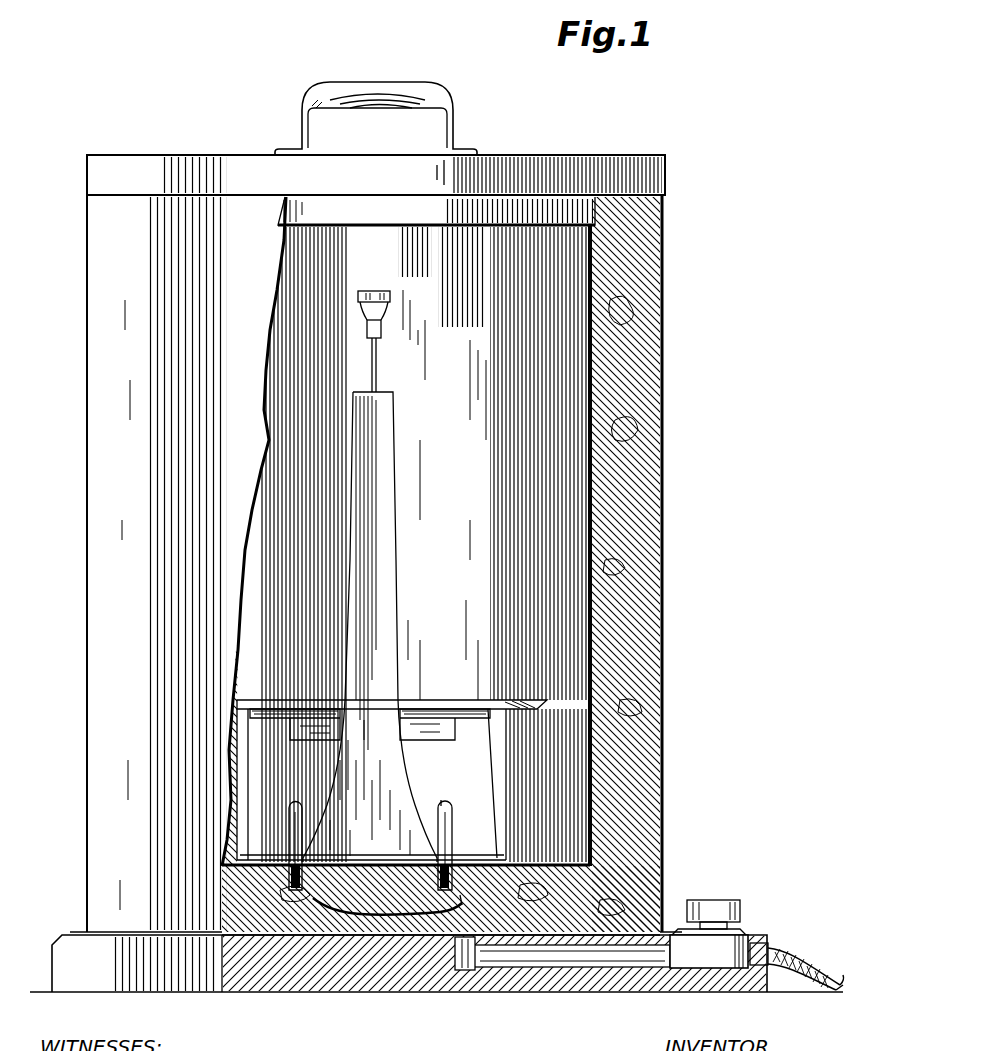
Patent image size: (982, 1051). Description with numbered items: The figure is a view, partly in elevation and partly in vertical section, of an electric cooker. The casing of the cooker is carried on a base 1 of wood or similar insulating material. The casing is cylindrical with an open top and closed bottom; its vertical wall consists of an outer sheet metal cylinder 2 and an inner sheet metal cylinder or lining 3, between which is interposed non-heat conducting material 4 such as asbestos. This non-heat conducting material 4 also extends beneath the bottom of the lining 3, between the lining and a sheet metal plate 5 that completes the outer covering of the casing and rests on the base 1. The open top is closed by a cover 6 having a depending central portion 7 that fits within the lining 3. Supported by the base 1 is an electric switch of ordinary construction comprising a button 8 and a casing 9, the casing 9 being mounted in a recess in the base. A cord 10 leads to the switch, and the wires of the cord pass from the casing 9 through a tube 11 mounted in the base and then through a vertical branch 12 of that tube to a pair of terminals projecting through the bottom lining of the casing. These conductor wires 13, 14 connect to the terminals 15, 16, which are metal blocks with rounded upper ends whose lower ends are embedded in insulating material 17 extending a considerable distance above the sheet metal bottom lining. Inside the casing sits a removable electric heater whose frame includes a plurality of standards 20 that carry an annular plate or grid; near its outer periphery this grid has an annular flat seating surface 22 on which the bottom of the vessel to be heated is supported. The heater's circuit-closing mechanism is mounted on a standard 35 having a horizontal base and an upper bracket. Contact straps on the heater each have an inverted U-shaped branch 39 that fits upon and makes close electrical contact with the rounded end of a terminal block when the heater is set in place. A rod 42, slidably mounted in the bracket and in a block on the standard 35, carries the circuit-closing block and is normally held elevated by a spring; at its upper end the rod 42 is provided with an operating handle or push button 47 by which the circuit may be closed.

The base 1 is at (358, 965).
The outer sheet metal cylinder 2 is at (662, 497).
The inner sheet metal cylinder or lining 3 is at (592, 545).
The non-heat conducting material 4 is at (634, 475).
The sheet metal plate 5 is at (296, 940).
The cover 6 is at (423, 170).
The depending central portion 7 is at (436, 212).
The button 8 is at (735, 902).
The casing 9 is at (709, 948).
The cord 10 is at (790, 962).
The tube 11 is at (535, 957).
The vertical branch 12 is at (462, 962).
The conductor wire 13 is at (462, 895).
The conductor wire 14 is at (313, 898).
The terminal 15 is at (447, 818).
The terminal 16 is at (300, 819).
The insulating material 17 is at (445, 872).
The standards 20 is at (500, 758).
The annular flat seating surface 22 is at (448, 697).
The standard 35 is at (370, 627).
The inverted U-shaped branch 39 is at (440, 792).
The rod 42 is at (378, 362).
The operating handle or push button 47 is at (392, 297).